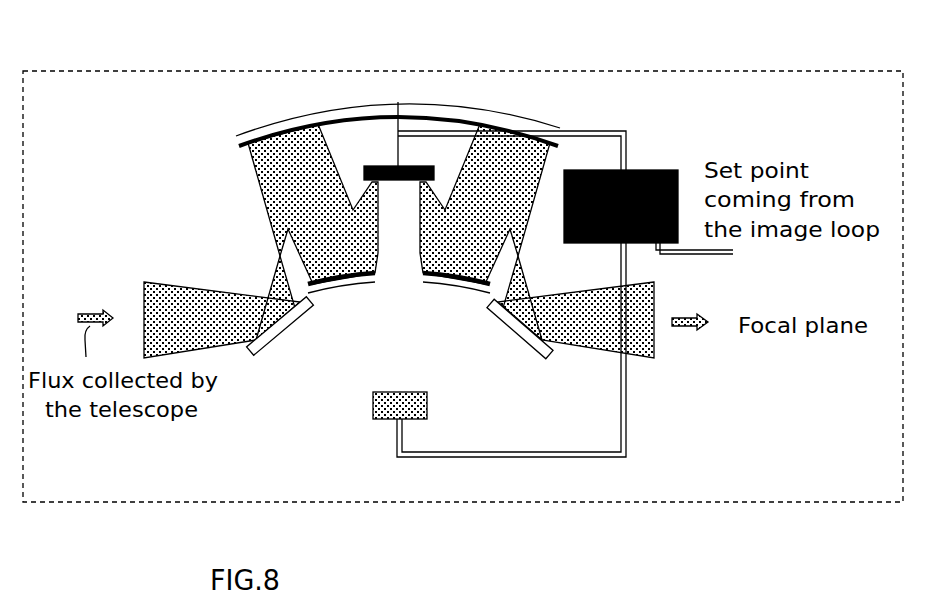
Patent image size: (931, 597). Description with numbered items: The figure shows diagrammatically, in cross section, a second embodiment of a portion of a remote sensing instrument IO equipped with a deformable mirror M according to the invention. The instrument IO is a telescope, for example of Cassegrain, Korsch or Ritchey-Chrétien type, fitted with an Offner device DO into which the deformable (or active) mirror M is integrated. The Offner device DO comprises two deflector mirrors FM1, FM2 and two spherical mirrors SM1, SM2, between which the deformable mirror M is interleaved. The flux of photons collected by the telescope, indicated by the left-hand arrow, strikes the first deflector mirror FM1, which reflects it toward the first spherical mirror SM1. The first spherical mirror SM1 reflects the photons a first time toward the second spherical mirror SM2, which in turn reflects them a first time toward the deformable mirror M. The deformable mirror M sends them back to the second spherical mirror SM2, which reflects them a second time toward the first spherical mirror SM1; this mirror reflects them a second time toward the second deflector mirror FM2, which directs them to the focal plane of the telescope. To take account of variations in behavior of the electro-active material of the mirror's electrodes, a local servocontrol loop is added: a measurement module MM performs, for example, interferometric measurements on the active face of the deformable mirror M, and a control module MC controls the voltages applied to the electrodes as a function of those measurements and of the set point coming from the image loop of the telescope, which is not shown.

The remote sensing instrument IO is at (165, 71).
The Offner device DO is at (545, 102).
The first spherical mirror SM1 is at (246, 127).
The second spherical mirror SM2 is at (332, 287).
The deformable mirror M is at (377, 164).
The control module MC is at (668, 166).
The measurement module MM is at (372, 421).
The first deflector mirror FM1 is at (255, 358).
The second deflector mirror FM2 is at (504, 322).